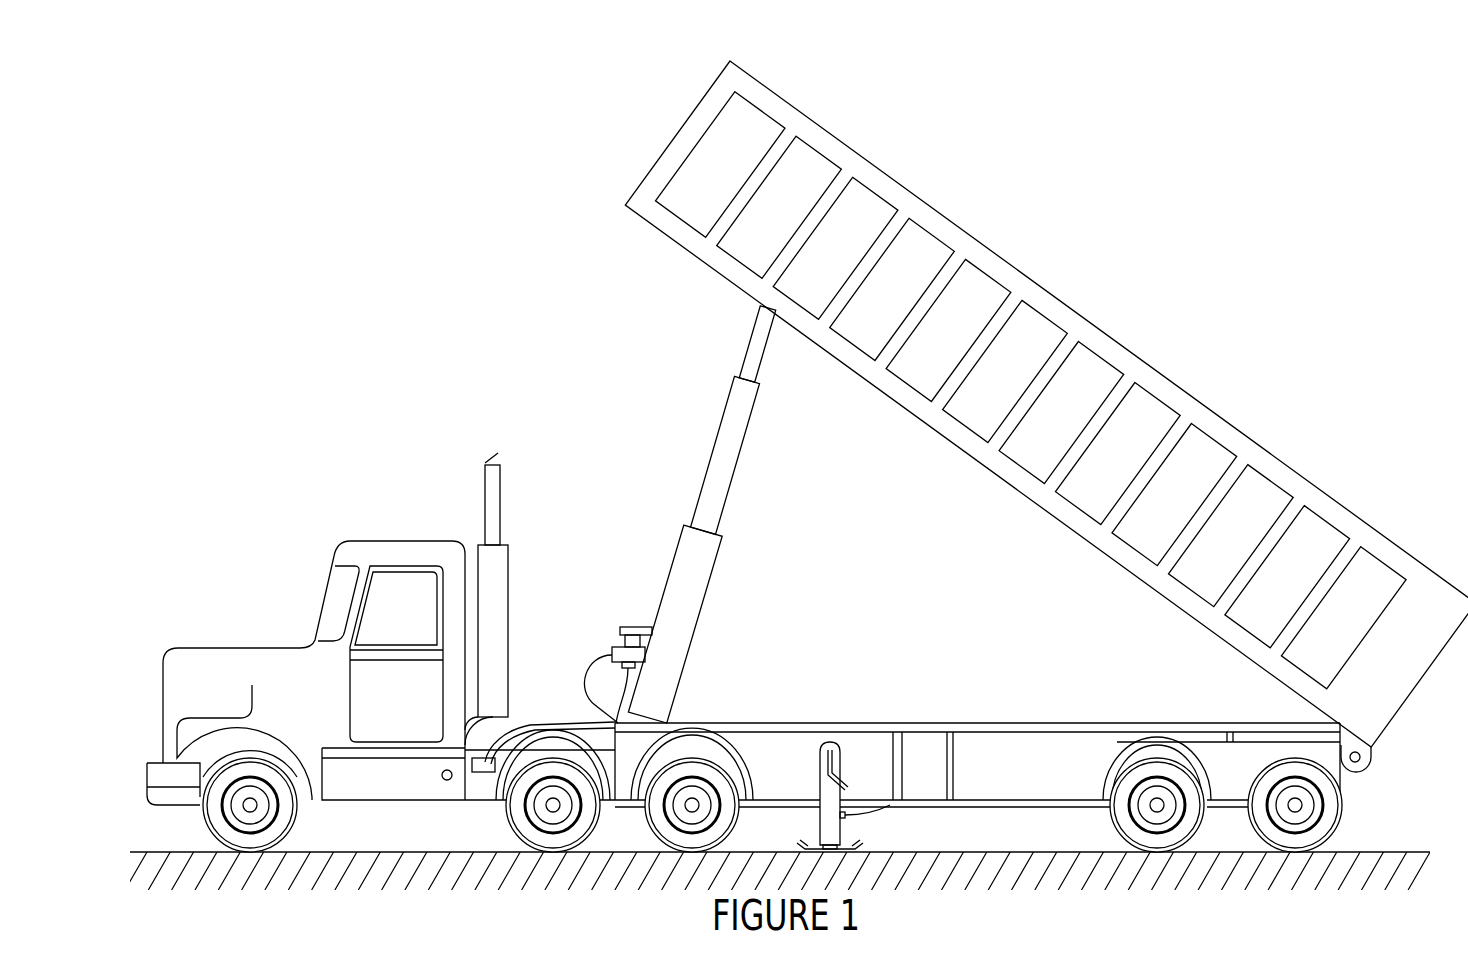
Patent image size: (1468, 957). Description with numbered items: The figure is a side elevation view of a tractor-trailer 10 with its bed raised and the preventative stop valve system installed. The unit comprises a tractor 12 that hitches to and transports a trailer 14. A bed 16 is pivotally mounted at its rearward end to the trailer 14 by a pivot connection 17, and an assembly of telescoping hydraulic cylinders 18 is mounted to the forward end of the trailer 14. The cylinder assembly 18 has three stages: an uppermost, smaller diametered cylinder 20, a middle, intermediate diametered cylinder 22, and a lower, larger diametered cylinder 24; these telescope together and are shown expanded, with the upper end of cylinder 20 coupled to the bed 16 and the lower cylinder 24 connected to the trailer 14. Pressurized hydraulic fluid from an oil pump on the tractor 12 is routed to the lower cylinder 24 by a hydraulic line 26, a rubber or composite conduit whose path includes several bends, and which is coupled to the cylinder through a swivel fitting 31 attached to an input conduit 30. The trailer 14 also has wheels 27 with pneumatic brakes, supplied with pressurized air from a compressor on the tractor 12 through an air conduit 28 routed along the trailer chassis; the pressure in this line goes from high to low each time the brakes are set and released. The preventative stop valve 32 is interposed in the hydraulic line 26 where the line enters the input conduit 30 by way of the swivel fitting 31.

The tractor-trailer 10 is at (436, 446).
The tractor 12 is at (288, 614).
The trailer 14 is at (925, 708).
The bed 16 is at (1016, 238).
The pivot connection 17 is at (1362, 762).
The assembly of telescoping hydraulic cylinders 18 is at (789, 492).
The uppermost cylinder 20 is at (742, 350).
The middle cylinder 22 is at (707, 470).
The lower cylinder 24 is at (677, 550).
The hydraulic line 26 is at (554, 722).
The wheels 27 is at (705, 762).
The air conduit 28 is at (597, 740).
The input conduit 30 is at (621, 626).
The swivel fitting 31 is at (640, 642).
The preventative stop valve 32 is at (603, 642).